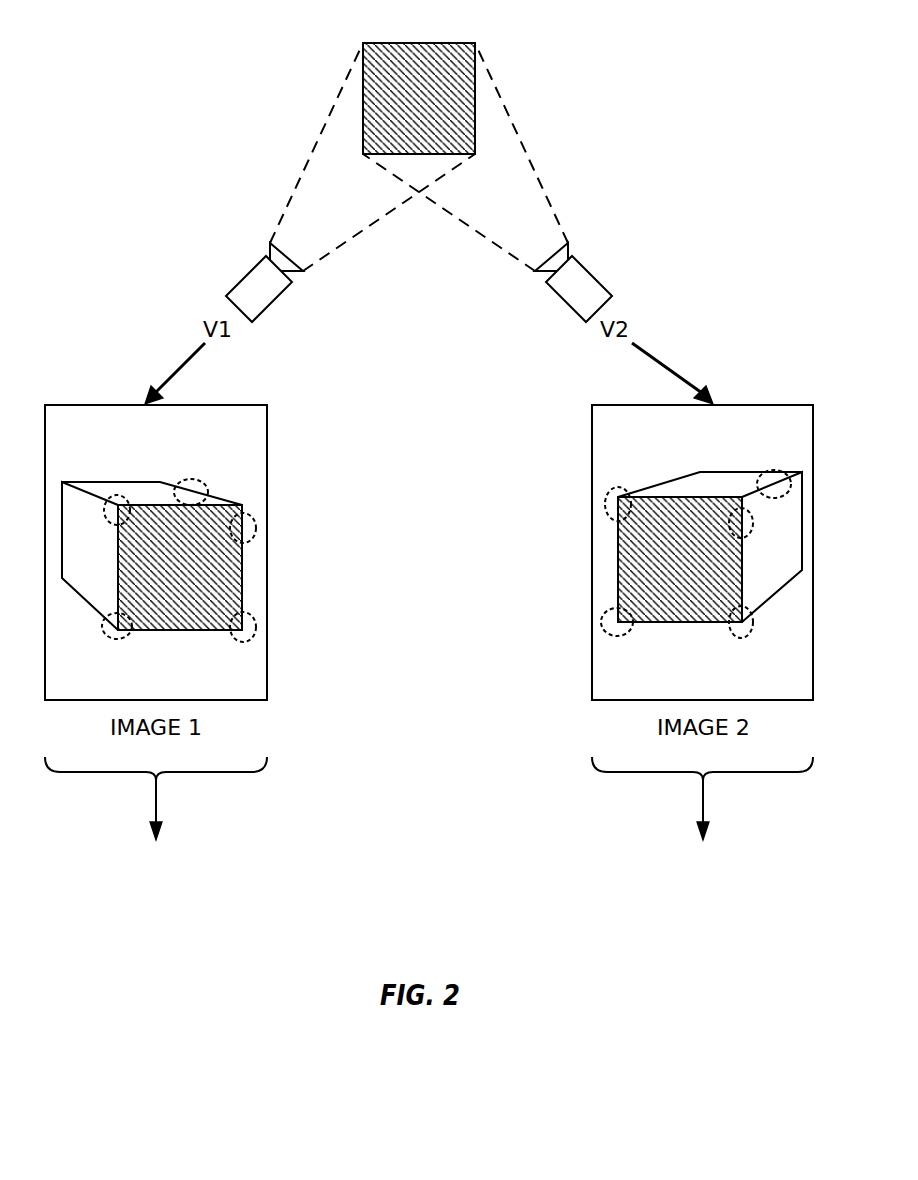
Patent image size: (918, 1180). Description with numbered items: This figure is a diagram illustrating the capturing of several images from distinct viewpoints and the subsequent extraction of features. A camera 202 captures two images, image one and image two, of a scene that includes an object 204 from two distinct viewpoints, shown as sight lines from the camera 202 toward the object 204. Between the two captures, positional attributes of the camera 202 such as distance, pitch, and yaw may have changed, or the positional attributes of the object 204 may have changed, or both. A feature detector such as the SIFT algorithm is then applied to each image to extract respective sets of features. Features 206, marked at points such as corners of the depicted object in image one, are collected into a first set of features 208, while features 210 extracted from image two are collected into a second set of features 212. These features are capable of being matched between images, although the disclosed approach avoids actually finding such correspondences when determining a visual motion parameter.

The camera 202 is at (591, 273).
The object 204 is at (410, 43).
The features 206 is at (194, 478).
The first set of features 208 is at (150, 881).
The features 210 is at (742, 639).
The second set of features 212 is at (697, 881).